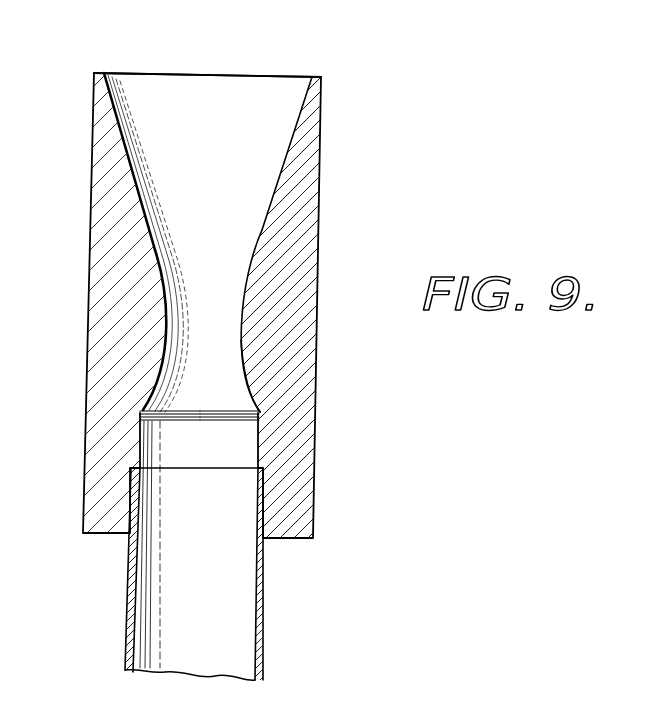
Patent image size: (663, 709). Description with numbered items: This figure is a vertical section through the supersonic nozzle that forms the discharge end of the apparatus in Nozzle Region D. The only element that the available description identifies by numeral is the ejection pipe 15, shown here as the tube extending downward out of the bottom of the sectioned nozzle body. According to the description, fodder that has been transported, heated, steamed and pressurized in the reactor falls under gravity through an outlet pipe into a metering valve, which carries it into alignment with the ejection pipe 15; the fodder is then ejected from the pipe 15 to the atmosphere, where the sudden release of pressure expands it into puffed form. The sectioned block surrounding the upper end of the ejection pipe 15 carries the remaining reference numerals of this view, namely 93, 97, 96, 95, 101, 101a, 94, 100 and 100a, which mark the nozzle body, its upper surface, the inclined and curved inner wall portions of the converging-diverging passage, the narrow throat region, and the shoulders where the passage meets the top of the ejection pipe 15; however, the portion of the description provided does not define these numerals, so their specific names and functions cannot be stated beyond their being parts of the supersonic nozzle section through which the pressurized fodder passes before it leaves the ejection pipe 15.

The nozzle body 93 is at (321, 241).
The top surface of nozzle body 97 is at (287, 74).
The inclined inlet wall 96 is at (265, 197).
The throat passage 95 is at (208, 326).
The curved left wall portion 101 is at (165, 322).
The curved right wall portion 101a is at (237, 323).
The lower curved wall 94 is at (246, 380).
The bottom shoulder of passage 100 is at (140, 412).
The bottom shoulder of passage (right) 100a is at (262, 417).
The ejection pipe 15 is at (264, 612).